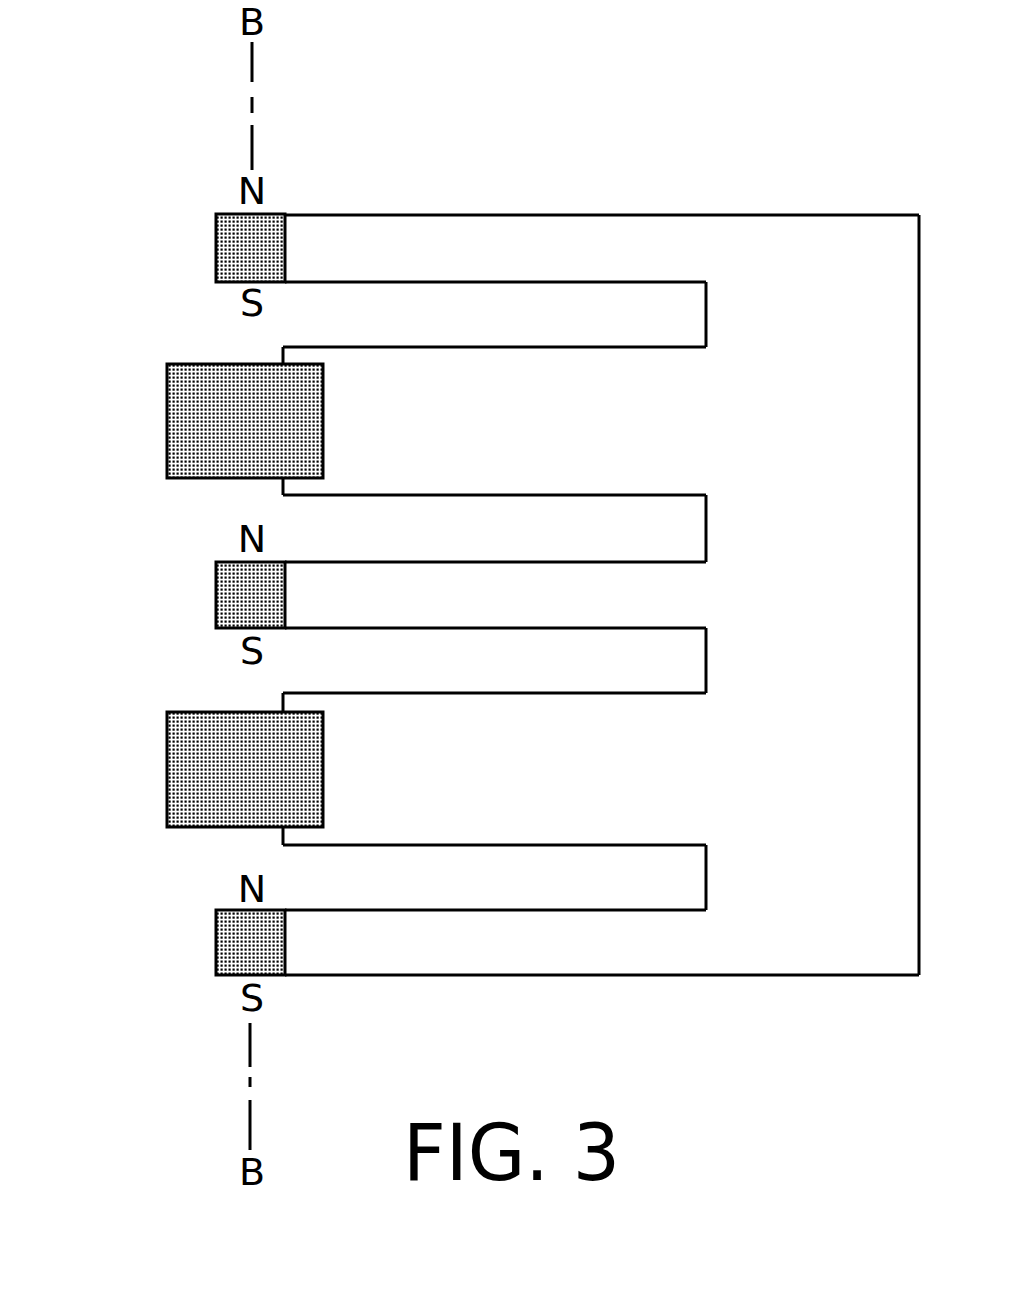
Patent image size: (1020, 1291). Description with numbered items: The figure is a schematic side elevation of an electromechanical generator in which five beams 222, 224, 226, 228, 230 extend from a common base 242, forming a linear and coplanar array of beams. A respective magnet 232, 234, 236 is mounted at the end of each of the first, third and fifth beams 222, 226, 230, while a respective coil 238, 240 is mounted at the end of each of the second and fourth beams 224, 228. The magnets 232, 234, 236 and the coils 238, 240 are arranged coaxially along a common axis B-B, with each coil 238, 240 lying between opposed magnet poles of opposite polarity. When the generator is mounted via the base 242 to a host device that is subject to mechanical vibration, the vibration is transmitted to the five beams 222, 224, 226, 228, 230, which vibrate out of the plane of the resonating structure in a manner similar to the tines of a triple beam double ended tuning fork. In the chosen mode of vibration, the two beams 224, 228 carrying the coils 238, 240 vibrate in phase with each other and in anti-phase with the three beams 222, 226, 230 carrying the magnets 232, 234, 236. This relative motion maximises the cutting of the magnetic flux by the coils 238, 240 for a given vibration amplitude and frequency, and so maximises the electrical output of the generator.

The first beam 222 is at (494, 236).
The second beam 224 is at (494, 370).
The third beam 226 is at (494, 586).
The fourth beam 228 is at (494, 718).
The fifth beam 230 is at (490, 955).
The magnet 232 is at (215, 253).
The magnet 234 is at (215, 600).
The magnet 236 is at (215, 947).
The coil 238 is at (167, 427).
The coil 240 is at (167, 775).
The common base 242 is at (871, 236).